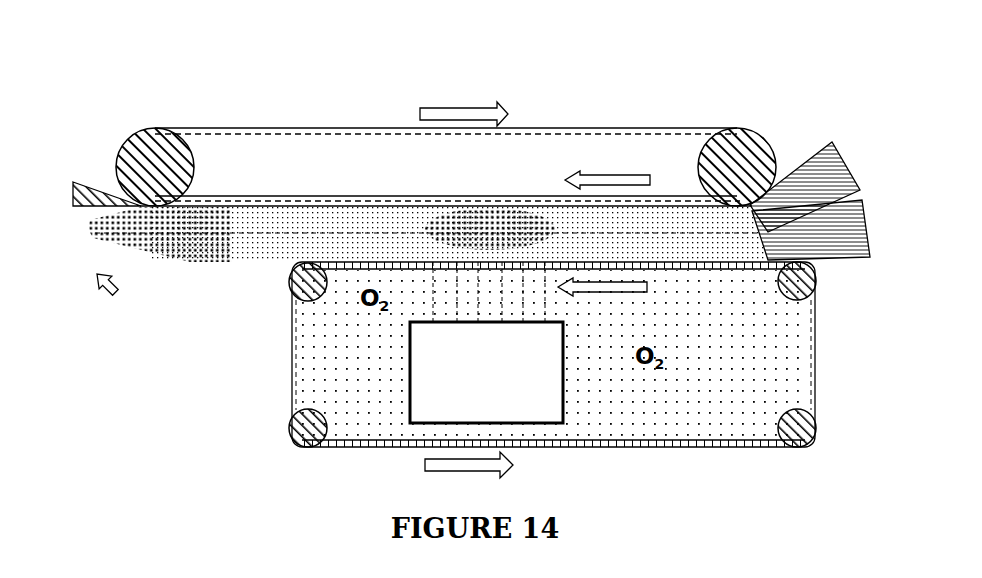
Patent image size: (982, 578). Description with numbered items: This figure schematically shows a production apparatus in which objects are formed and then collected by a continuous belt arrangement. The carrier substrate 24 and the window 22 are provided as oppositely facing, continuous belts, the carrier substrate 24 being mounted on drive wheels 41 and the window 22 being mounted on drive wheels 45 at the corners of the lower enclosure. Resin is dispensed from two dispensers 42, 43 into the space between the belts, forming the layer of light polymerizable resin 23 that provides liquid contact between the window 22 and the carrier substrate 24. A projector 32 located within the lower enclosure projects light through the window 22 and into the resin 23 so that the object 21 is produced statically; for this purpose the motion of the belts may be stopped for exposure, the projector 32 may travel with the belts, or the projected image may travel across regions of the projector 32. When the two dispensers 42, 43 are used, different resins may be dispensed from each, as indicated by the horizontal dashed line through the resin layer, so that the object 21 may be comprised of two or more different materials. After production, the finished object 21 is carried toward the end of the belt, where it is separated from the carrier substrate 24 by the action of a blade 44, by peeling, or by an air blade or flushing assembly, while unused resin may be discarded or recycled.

The drive wheel 41 is at (137, 162).
The blade 44 is at (83, 182).
The carrier substrate 24 is at (342, 197).
The object 21 is at (147, 247).
The light polymerizable resin 23 is at (431, 234).
The window 22 is at (332, 265).
The dispenser 43 is at (805, 187).
The dispenser 42 is at (811, 230).
The drive wheel 45 is at (293, 290).
The projector 32 is at (486, 372).